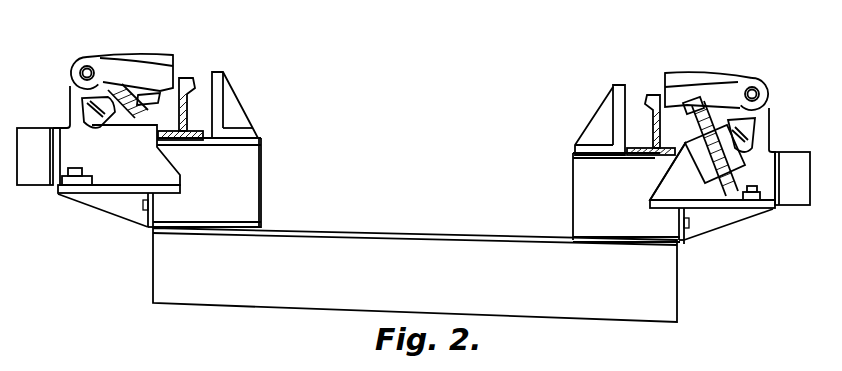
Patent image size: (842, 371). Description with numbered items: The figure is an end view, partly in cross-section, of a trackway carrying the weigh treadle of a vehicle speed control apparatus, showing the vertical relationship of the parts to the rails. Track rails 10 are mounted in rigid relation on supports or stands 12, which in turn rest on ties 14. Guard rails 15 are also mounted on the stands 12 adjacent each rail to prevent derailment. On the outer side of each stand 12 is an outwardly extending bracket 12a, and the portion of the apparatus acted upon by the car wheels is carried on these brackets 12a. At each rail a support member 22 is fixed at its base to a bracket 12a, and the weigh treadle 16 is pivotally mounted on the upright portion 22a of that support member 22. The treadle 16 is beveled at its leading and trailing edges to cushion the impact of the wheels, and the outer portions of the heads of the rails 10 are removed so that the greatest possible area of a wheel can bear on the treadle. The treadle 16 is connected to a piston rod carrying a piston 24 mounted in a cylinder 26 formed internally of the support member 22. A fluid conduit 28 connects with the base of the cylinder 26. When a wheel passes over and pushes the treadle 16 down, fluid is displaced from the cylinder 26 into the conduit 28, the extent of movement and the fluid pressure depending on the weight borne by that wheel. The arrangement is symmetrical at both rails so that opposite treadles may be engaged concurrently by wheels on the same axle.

The track rails 10 is at (184, 83).
The supports or stands 12 is at (252, 160).
The brackets 12a is at (128, 205).
The ties 14 is at (418, 286).
The guard rails 15 is at (232, 96).
The weigh treadle 16 is at (103, 62).
The support member 22 is at (129, 157).
The upright portion 22a is at (72, 96).
The piston 24 is at (672, 167).
The cylinder 26 is at (750, 158).
The fluid conduit 28 is at (733, 213).